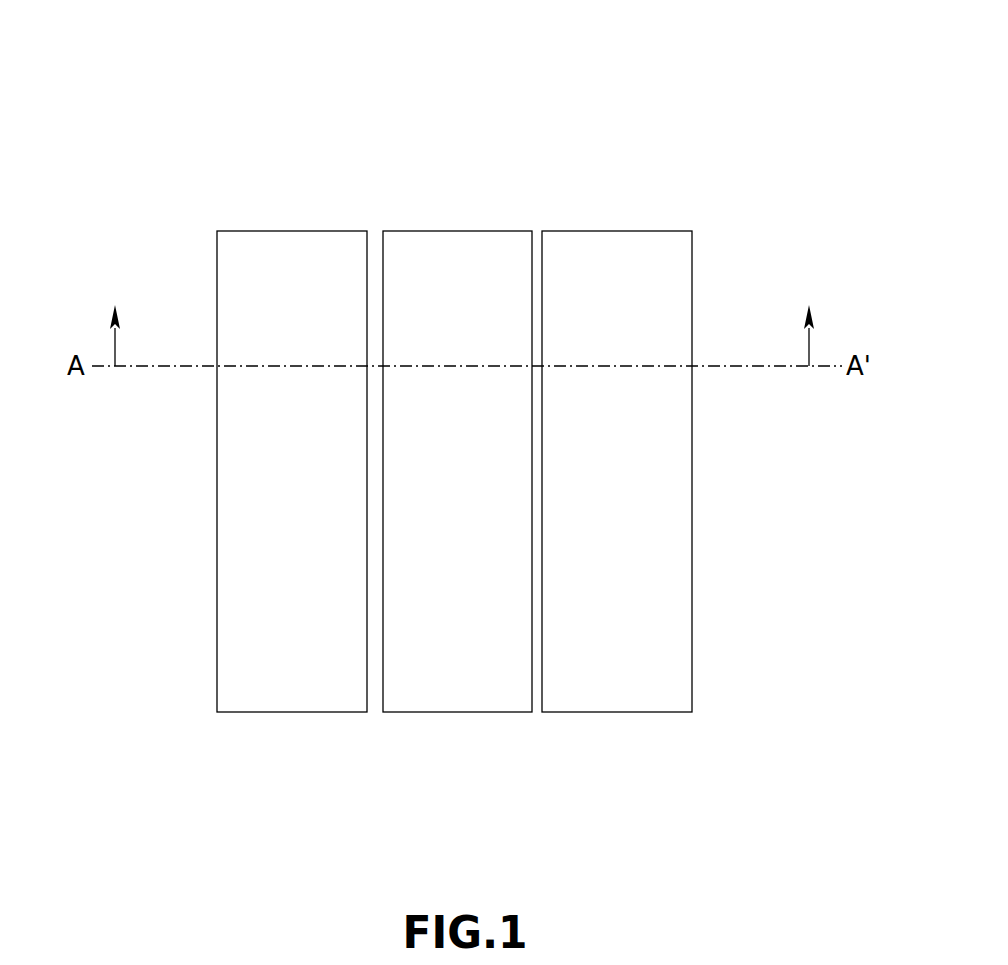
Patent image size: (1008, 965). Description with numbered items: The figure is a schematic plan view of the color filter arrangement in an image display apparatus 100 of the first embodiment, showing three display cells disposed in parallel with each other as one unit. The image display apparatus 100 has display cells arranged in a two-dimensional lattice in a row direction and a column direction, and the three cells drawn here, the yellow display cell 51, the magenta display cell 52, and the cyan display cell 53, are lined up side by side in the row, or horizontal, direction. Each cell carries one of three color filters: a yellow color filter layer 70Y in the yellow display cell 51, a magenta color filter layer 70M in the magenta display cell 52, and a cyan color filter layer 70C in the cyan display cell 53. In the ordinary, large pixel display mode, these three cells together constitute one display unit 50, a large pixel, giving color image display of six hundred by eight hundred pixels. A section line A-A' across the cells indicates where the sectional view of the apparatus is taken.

The image display apparatus 100 is at (629, 128).
The display unit 50 is at (500, 200).
The yellow display cell 51 is at (253, 688).
The magenta display cell 52 is at (417, 688).
The cyan display cell 53 is at (568, 688).
The yellow color filter layer 70Y is at (331, 688).
The magenta color filter layer 70M is at (487, 688).
The cyan color filter layer 70C is at (647, 688).